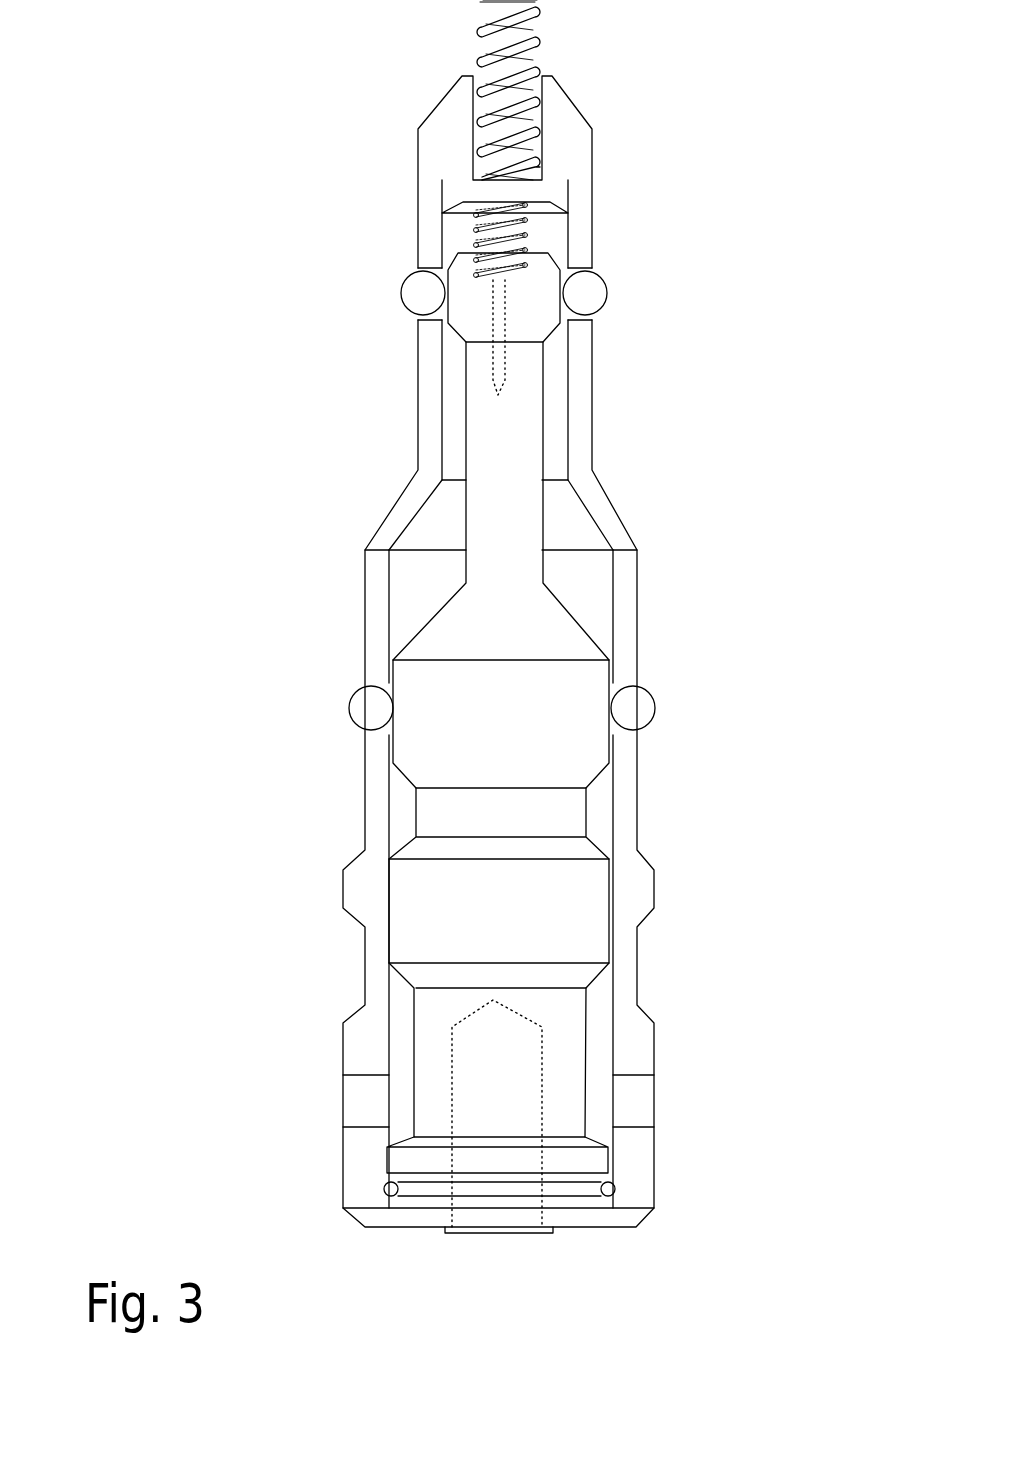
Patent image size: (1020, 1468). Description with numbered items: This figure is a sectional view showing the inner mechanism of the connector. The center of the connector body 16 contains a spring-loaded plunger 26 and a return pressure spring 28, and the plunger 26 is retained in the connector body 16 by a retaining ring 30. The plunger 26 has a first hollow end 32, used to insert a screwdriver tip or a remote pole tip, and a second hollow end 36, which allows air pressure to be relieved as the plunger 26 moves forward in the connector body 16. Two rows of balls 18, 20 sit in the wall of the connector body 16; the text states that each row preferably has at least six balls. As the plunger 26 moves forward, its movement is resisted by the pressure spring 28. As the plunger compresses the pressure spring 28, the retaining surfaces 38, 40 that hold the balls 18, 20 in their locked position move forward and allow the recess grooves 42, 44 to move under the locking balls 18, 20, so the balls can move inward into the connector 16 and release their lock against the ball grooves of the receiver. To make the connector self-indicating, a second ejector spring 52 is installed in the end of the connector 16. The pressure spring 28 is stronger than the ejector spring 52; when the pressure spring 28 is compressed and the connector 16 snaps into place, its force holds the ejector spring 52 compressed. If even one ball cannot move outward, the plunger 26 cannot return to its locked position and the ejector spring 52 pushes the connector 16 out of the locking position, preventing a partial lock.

The connector body 16 is at (592, 207).
The balls 18 is at (608, 310).
The balls 20 is at (655, 708).
The spring-loaded plunger 26 is at (563, 1012).
The return pressure spring 28 is at (525, 232).
The retaining ring 30 is at (615, 1189).
The first hollow end 32 is at (508, 1233).
The second hollow end 36 is at (507, 367).
The retaining surface 38 is at (490, 278).
The retaining surface 40 is at (450, 707).
The recess groove 42 is at (466, 568).
The recess groove 44 is at (419, 812).
The ejector spring 52 is at (537, 43).